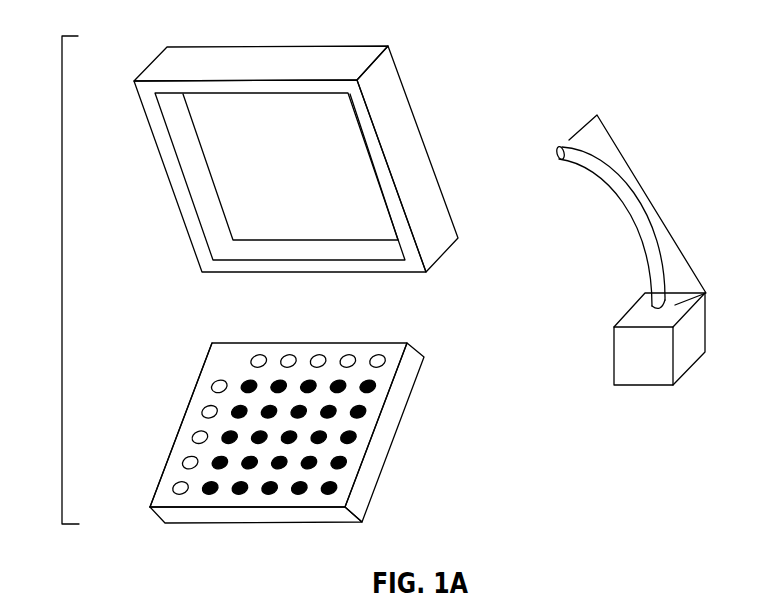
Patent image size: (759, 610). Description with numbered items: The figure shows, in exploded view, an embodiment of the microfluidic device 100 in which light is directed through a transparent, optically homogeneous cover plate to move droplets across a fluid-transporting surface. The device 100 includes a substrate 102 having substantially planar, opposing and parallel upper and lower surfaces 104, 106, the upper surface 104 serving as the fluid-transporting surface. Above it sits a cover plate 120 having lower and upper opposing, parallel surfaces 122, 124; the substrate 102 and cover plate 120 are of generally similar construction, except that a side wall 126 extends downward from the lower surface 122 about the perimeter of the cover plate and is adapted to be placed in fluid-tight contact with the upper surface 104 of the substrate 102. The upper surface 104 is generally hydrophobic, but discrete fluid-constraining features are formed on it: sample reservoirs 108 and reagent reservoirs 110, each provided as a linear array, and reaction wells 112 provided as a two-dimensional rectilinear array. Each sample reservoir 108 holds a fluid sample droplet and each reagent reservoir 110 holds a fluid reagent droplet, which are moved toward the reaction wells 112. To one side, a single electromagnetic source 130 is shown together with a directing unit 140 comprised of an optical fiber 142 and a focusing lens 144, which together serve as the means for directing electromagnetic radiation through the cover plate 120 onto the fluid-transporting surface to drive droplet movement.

The device 100 is at (62, 279).
The substrate 102 is at (413, 355).
The upper surface 104 is at (393, 352).
The lower surface 106 is at (405, 413).
The sample reservoirs 108 is at (211, 388).
The reagent reservoirs 110 is at (377, 355).
The reaction wells 112 is at (323, 443).
The cover plate 120 is at (373, 62).
The lower surface 122 is at (358, 170).
The upper surface 124 is at (440, 213).
The side wall 126 is at (177, 175).
The electromagnetic source 130 is at (623, 363).
The directing unit 140 is at (653, 205).
The optical fiber 142 is at (618, 200).
The focusing lens 144 is at (557, 155).